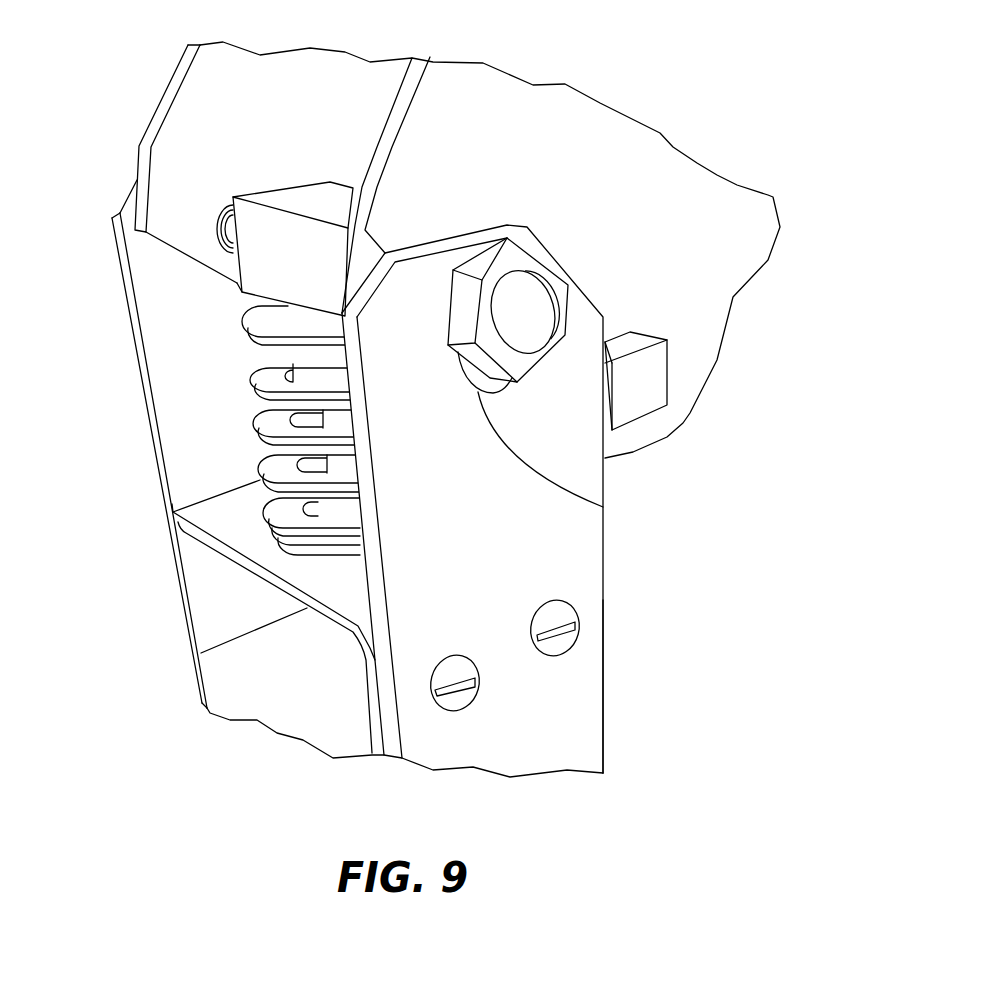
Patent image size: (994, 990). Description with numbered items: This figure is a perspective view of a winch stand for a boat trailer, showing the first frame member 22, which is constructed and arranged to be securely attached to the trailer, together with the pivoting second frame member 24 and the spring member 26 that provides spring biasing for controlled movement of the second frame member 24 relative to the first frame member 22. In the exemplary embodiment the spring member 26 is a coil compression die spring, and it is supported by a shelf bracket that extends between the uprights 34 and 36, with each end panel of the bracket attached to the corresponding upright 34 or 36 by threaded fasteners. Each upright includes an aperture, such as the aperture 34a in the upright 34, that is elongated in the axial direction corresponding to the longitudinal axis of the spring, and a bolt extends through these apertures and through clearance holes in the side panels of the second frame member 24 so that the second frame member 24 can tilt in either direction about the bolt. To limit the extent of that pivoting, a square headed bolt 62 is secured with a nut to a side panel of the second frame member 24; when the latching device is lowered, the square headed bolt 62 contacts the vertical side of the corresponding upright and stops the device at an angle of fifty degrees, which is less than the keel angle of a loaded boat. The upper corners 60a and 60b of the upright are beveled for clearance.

The first frame member 22 is at (572, 713).
The second frame member 24 is at (725, 287).
The spring member 26 is at (252, 348).
The upright 34 is at (590, 545).
The aperture 34a is at (603, 507).
The upright 36 is at (145, 413).
The upper corner 60a is at (120, 213).
The upper corner 60b is at (550, 252).
The square headed bolt 62 is at (658, 425).